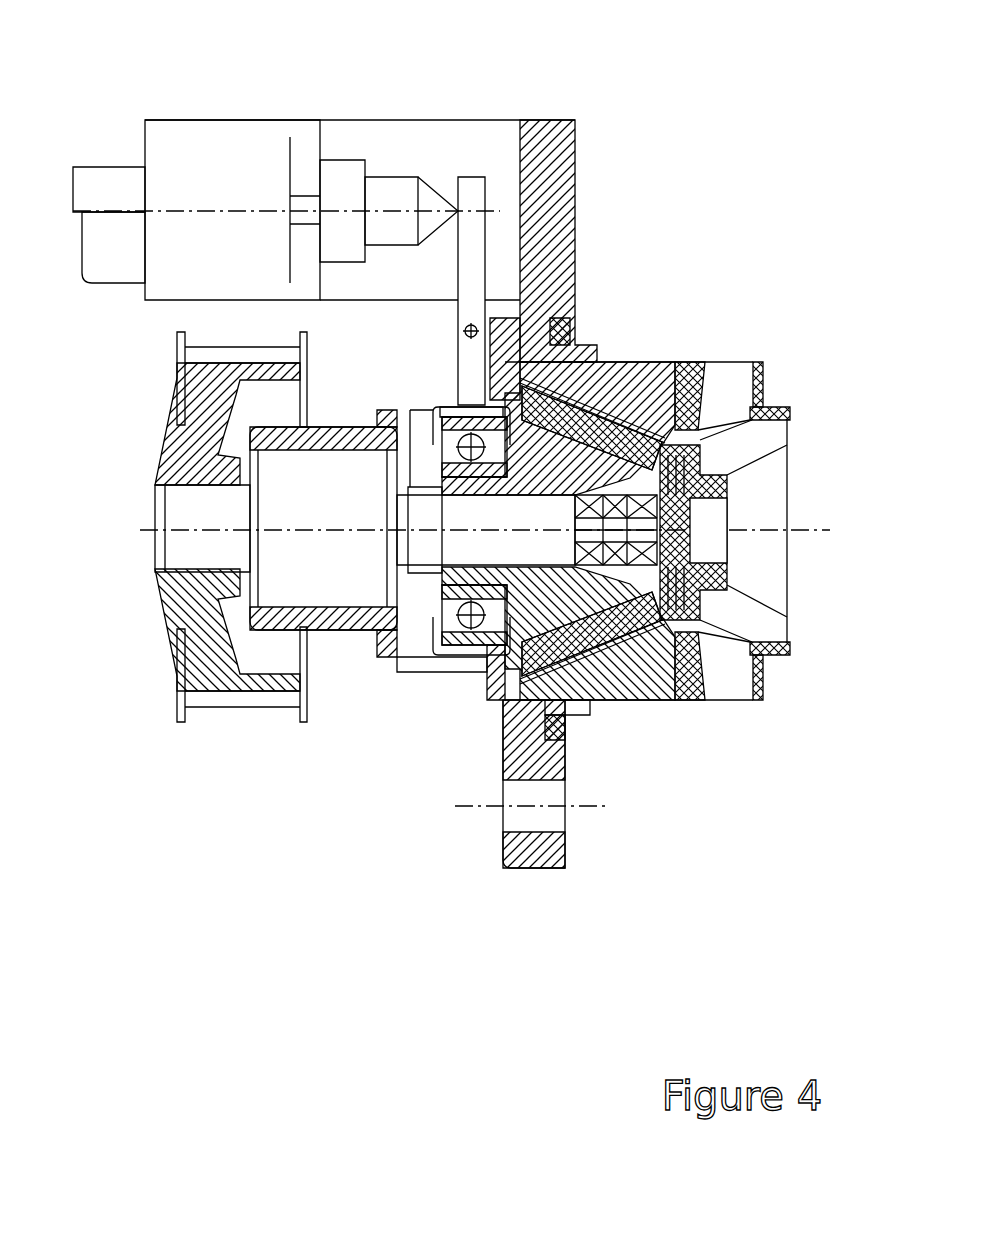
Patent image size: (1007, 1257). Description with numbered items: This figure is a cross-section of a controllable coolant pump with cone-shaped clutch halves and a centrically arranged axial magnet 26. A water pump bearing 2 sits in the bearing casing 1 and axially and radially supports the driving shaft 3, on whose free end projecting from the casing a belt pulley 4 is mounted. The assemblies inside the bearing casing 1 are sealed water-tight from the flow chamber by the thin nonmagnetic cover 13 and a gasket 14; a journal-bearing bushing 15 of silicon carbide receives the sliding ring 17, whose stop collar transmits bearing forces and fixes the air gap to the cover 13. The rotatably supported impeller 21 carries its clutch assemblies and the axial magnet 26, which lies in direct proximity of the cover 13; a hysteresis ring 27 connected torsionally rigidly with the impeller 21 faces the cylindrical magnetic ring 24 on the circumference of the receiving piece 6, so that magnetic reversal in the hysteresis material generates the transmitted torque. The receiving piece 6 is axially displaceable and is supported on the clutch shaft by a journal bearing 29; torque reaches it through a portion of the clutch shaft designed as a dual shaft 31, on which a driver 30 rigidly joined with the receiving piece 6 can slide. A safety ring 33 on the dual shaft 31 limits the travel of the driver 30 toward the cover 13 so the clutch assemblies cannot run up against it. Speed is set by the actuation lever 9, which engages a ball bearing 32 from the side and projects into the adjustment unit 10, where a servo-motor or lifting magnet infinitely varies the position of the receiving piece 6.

The bearing casing 1 is at (330, 425).
The water pump bearing 2 is at (293, 483).
The driving shaft 3 is at (157, 478).
The belt pulley 4 is at (208, 385).
The receiving piece 6 is at (535, 683).
The actuation lever 9 is at (472, 190).
The adjustment unit 10 is at (160, 148).
The cover 13 is at (705, 425).
The gasket 14 is at (567, 730).
The journal-bearing bushing 15 is at (760, 645).
The sliding ring 17 is at (717, 588).
The impeller 21 is at (790, 418).
The magnetic ring 24 is at (668, 365).
The axial magnet 26 is at (693, 552).
The hysteresis ring 27 is at (612, 362).
The journal bearing 29 is at (435, 605).
The driver 30 is at (657, 618).
The dual shaft 31 is at (692, 520).
The ball bearing 32 is at (440, 405).
The safety ring 33 is at (690, 608).